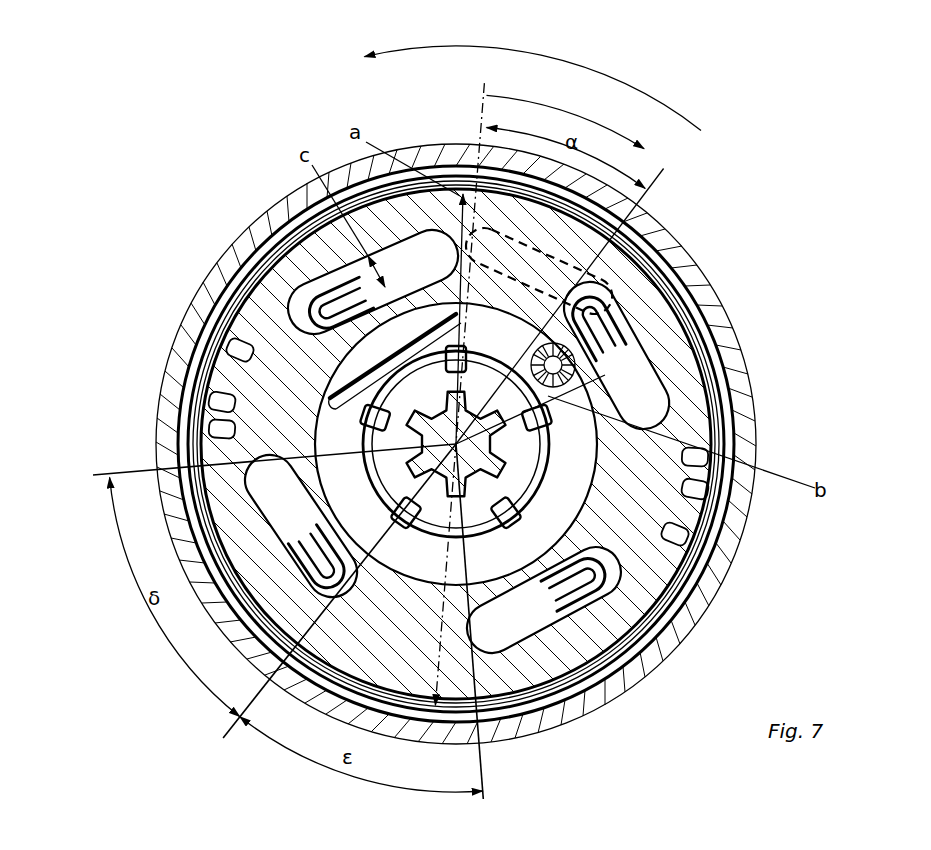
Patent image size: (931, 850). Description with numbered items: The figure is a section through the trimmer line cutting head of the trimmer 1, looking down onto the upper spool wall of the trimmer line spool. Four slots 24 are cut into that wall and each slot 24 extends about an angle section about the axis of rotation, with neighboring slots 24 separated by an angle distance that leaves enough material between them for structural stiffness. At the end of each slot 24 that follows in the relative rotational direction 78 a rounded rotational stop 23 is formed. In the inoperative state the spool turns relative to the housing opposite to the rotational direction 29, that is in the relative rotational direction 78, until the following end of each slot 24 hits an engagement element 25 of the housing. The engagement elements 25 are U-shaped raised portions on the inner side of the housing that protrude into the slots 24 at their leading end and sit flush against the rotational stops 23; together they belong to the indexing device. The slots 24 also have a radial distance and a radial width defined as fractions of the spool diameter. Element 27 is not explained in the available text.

The trimmer 1 is at (270, 163).
The rotational stop 23 is at (468, 232).
The slot 24 is at (490, 218).
The engagement element 25 is at (200, 407).
The roller 27 is at (570, 398).
The rotational direction 29 is at (532, 82).
The relative rotational direction 78 is at (566, 122).